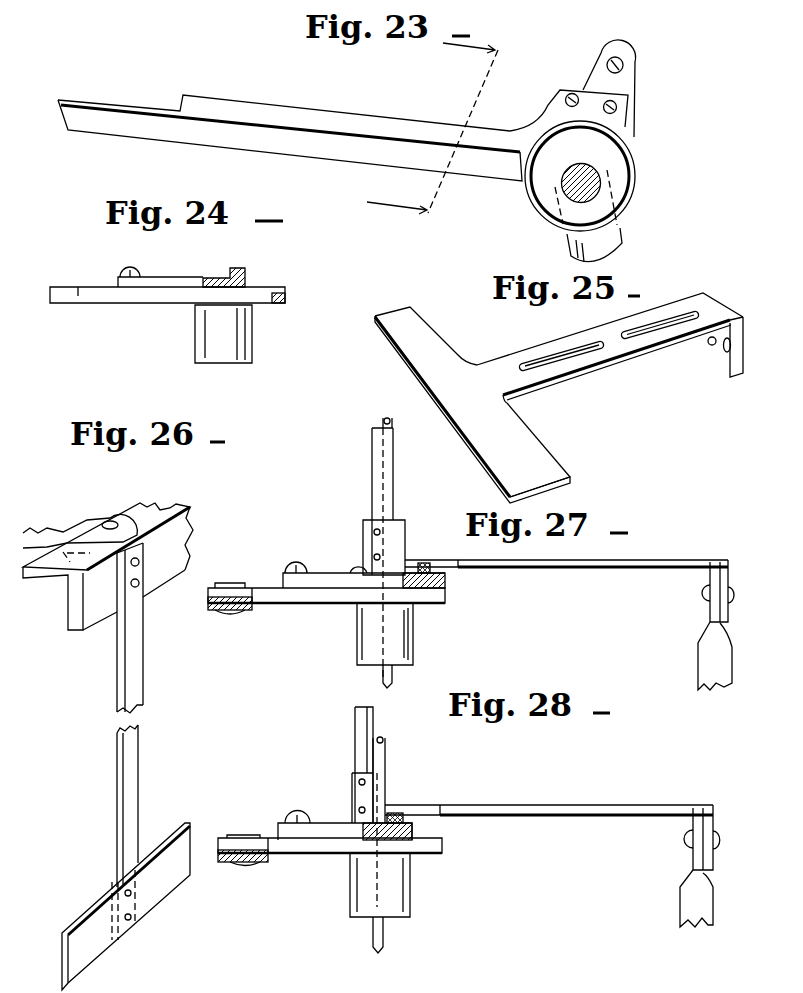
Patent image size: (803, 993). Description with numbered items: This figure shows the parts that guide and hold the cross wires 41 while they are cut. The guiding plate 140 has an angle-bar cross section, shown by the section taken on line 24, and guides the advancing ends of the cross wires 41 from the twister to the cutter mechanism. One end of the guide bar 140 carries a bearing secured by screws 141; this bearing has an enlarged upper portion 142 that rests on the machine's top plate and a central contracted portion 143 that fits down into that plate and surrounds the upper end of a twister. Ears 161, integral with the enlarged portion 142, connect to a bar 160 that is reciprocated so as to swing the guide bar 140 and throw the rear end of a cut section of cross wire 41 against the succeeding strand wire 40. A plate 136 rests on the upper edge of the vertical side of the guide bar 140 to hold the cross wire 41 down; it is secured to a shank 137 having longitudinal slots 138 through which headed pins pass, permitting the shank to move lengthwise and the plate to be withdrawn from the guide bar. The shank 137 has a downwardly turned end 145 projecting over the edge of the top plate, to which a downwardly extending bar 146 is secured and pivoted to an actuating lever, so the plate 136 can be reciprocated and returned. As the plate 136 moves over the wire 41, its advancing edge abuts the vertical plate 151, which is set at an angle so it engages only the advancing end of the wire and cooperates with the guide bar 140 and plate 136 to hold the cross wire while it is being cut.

In FIG. 23, the section line 24- 24 is at (446, 134).
In FIG. 27, the strand wire 40 is at (393, 423).
In FIG. 28, the strand wire 40 is at (385, 753).
In FIG. 27, the cross wire 41 is at (420, 563).
In FIG. 28, the cross wire 41 is at (397, 812).
In FIG. 25, the plate 136 is at (472, 405).
In FIG. 27, the plate 136 is at (437, 560).
In FIG. 28, the plate 136 is at (423, 810).
In FIG. 25, the shank 137 is at (608, 353).
In FIG. 27, the shank 137 is at (570, 568).
In FIG. 28, the shank 137 is at (562, 813).
In FIG. 25, the longitudinal slots 138 is at (565, 355).
In FIG. 23, the guiding plate 140 is at (335, 145).
In FIG. 24, the guiding plate 140 is at (178, 278).
In FIG. 27, the guiding plate 140 is at (447, 580).
In FIG. 28, the guiding plate 140 is at (413, 827).
In FIG. 23, the screws 141 is at (610, 110).
In FIG. 23, the enlarged upper portion 142 is at (622, 185).
In FIG. 27, the enlarged upper portion 142 is at (445, 598).
In FIG. 28, the enlarged upper portion 142 is at (443, 847).
In FIG. 23, the central contracted portion 143 is at (613, 247).
In FIG. 24, the central contracted portion 143 is at (213, 345).
In FIG. 27, the central contracted portion 143 is at (413, 640).
In FIG. 28, the central contracted portion 143 is at (410, 882).
In FIG. 25, the downwardly turned end 145 is at (722, 357).
In FIG. 27, the downwardly turned end 145 is at (725, 587).
In FIG. 28, the downwardly turned end 145 is at (703, 853).
In FIG. 27, the downwardly extending bar 146 is at (703, 657).
In FIG. 28, the downwardly extending bar 146 is at (688, 903).
In FIG. 26, the vertical plate 151 is at (177, 887).
In FIG. 27, the vertical plate 151 is at (363, 527).
In FIG. 28, the vertical plate 151 is at (362, 765).
In FIG. 27, the bar 160 is at (215, 611).
In FIG. 28, the bar 160 is at (238, 863).
In FIG. 23, the ears 161 is at (623, 83).
In FIG. 24, the ears 161 is at (73, 290).
In FIG. 27, the ears 161 is at (252, 587).
In FIG. 28, the ears 161 is at (245, 842).